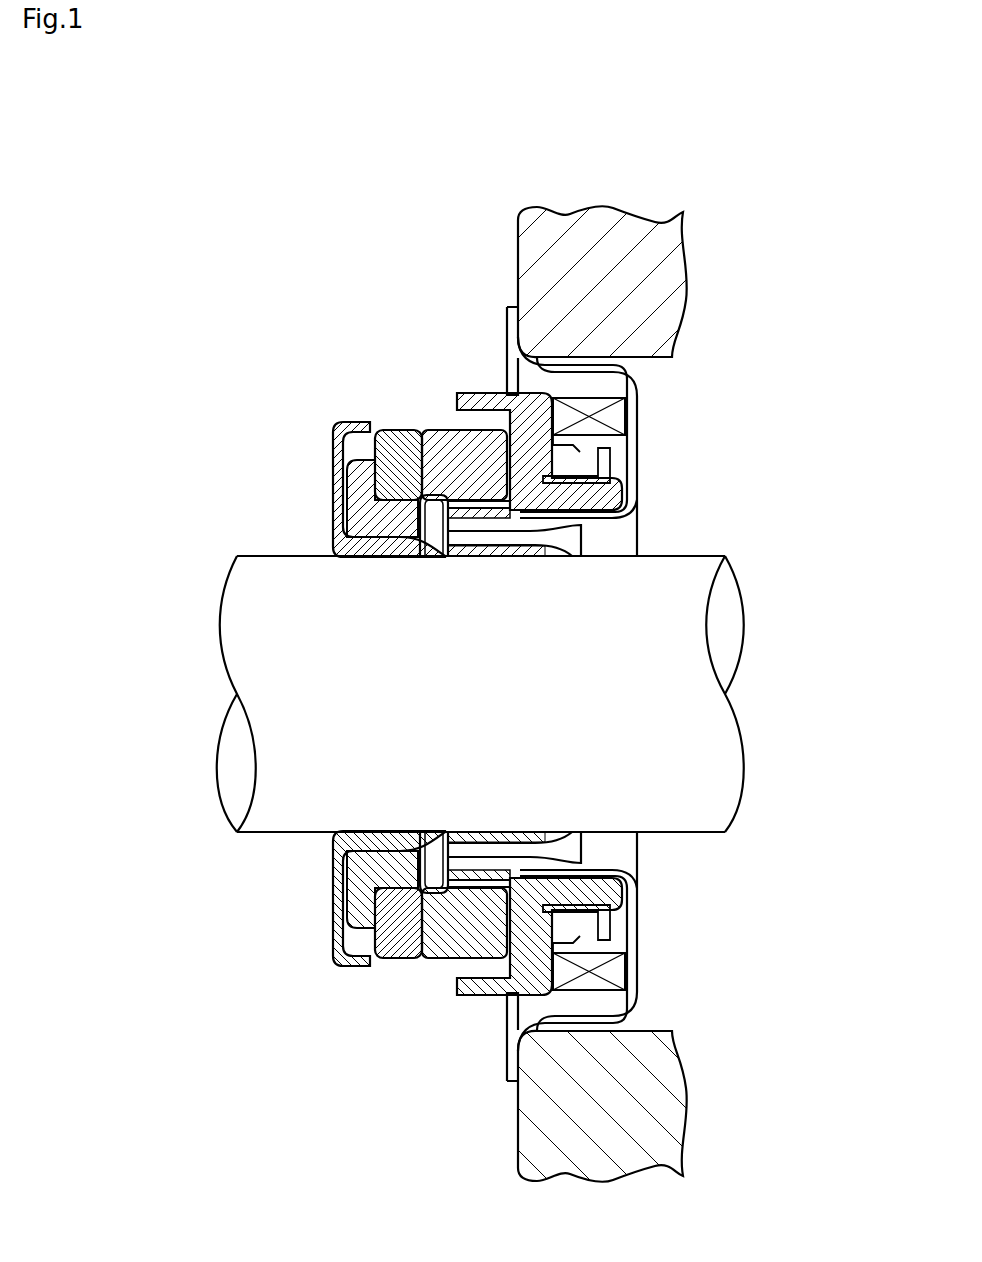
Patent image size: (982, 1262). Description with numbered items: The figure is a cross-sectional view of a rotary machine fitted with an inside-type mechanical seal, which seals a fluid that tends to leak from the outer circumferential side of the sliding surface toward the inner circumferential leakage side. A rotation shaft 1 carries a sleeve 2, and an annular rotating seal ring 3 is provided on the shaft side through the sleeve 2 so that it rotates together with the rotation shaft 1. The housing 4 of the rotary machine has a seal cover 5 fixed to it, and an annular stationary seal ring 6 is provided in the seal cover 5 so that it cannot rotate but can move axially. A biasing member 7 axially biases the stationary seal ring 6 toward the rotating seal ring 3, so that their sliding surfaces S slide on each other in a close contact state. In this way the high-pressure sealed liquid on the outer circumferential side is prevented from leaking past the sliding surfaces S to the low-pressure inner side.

The rotation shaft 1 is at (260, 555).
The sleeve 2 is at (332, 478).
The rotating seal ring 3 is at (398, 453).
The housing 4 is at (540, 255).
The seal cover 5 is at (631, 390).
The stationary seal ring 6 is at (448, 467).
The biasing member 7 is at (615, 418).
The sliding surface S is at (394, 540).